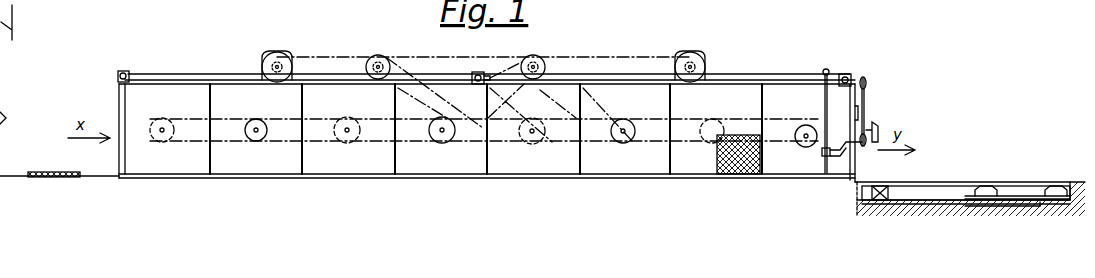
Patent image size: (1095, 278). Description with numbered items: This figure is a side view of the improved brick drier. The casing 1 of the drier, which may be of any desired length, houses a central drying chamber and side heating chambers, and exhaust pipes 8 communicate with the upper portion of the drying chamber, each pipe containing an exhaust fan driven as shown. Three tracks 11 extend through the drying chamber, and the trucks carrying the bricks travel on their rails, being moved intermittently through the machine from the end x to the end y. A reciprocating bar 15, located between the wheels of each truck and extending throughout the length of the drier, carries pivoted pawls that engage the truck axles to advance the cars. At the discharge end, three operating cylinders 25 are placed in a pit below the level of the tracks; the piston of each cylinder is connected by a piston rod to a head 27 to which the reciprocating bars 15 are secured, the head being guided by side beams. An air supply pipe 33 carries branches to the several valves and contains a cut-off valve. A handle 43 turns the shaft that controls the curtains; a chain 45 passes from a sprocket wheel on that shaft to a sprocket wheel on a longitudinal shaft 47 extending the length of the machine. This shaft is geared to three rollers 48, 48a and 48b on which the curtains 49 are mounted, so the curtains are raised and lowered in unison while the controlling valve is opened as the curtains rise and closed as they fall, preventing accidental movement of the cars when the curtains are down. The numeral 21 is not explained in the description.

The casing of the drier 1 is at (487, 119).
The exhaust pipe 8 is at (266, 64).
The track 11 is at (923, 184).
The reciprocating bar 15 is at (868, 184).
The ground support 21 is at (75, 172).
The operating cylinder 25 is at (1015, 196).
The head 27 is at (892, 186).
The air supply pipe 33 is at (826, 105).
The handle 43 is at (879, 124).
The chain 45 is at (872, 100).
The longitudinal shaft 47 is at (770, 84).
The roller 48 is at (128, 66).
The roller 48a is at (480, 72).
The roller 48b is at (846, 74).
The curtain 49 is at (120, 106).